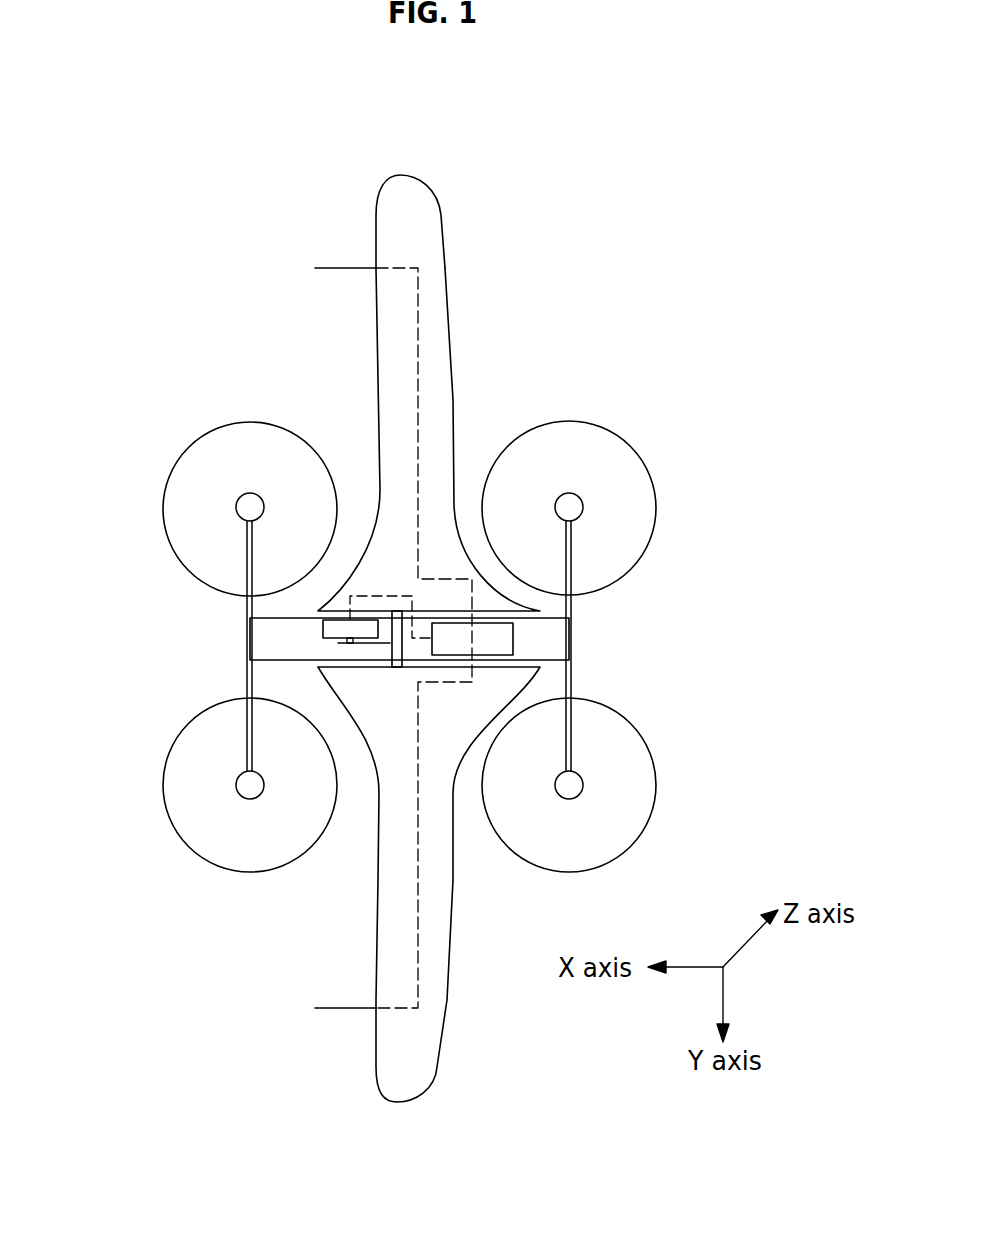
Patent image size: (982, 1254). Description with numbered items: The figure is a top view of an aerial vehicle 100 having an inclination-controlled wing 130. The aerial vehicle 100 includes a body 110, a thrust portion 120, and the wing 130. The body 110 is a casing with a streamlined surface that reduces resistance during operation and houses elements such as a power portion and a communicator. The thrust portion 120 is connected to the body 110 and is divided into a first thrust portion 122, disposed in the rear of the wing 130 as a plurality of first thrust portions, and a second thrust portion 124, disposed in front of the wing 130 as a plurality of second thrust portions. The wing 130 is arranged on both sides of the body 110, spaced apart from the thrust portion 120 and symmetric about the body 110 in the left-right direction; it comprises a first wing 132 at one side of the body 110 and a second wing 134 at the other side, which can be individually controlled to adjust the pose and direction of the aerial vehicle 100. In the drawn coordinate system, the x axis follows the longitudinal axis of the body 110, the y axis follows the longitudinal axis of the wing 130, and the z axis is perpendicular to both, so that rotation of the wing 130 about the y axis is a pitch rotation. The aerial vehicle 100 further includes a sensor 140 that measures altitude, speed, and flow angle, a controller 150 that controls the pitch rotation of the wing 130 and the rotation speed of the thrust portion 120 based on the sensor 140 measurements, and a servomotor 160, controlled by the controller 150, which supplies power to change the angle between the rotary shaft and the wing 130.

The aerial vehicle 100 is at (430, 125).
The body 110 is at (552, 629).
The thrust portion 120 is at (160, 263).
The first thrust portion 122 is at (533, 440).
The second thrust portion 124 is at (258, 429).
The wing 130 is at (88, 533).
The first wing 132 is at (388, 919).
The second wing 134 is at (377, 547).
The sensor 140 is at (345, 268).
The controller 150 is at (510, 643).
The servomotor 160 is at (327, 627).